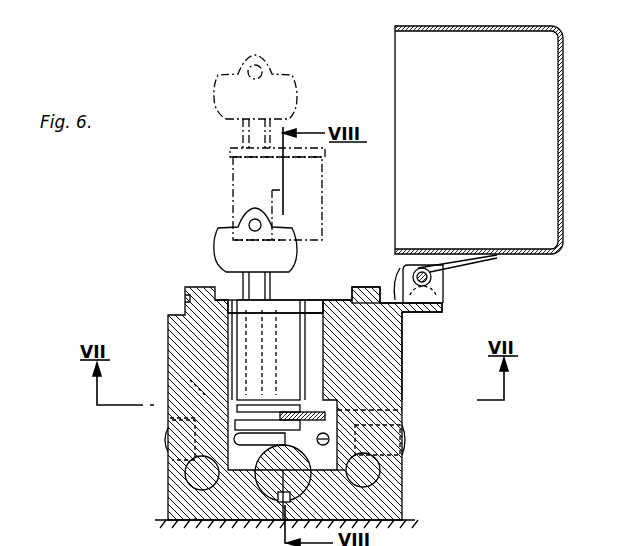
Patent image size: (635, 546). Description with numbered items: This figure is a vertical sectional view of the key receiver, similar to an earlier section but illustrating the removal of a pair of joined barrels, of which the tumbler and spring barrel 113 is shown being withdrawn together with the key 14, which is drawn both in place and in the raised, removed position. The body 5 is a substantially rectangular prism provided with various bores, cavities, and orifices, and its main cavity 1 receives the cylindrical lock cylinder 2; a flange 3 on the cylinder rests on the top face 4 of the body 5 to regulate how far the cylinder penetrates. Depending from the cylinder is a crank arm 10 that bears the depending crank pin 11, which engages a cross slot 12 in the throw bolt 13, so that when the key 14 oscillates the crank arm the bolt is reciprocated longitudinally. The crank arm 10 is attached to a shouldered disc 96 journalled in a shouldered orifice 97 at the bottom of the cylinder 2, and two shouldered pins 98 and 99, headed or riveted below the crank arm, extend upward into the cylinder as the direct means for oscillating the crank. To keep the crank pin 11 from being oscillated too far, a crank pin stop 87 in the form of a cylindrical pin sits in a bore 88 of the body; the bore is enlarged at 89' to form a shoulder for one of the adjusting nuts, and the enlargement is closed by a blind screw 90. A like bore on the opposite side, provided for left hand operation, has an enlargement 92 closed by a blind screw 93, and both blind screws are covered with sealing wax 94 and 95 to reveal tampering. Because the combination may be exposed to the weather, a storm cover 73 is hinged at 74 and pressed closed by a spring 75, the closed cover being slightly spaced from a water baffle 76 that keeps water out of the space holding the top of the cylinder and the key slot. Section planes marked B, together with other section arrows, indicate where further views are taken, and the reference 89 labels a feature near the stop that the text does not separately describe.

The main cavity 1 is at (240, 325).
The lock cylinder 2 is at (340, 322).
The flange 3 is at (352, 292).
The top face 4 is at (378, 286).
The body 5 is at (400, 357).
The crank arm 10 is at (402, 380).
The crank pin 11 is at (323, 453).
The cross slot 12 is at (313, 485).
The throw bolt 13 is at (275, 470).
The key 14 is at (290, 82).
The storm cover 73 is at (562, 78).
The hinge 74 is at (440, 288).
The spring 75 is at (440, 275).
The water baffle 76 is at (183, 296).
The crank pin stop 87 is at (270, 520).
The bore 88 is at (192, 380).
The pin 89 is at (188, 532).
The enlarged bore 89' is at (157, 422).
The blind screw 90 is at (186, 462).
The enlargement 92 is at (472, 410).
The blind screw 93 is at (396, 455).
The sealing wax 94 is at (405, 438).
The sealing wax 95 is at (168, 440).
The shouldered disc 96 is at (280, 412).
The shouldered orifice 97 is at (300, 412).
The shouldered pin 98 is at (228, 298).
The shouldered pin 99 is at (300, 298).
The tumbler and spring barrel 113 is at (395, 300).
The section line B is at (220, 475).